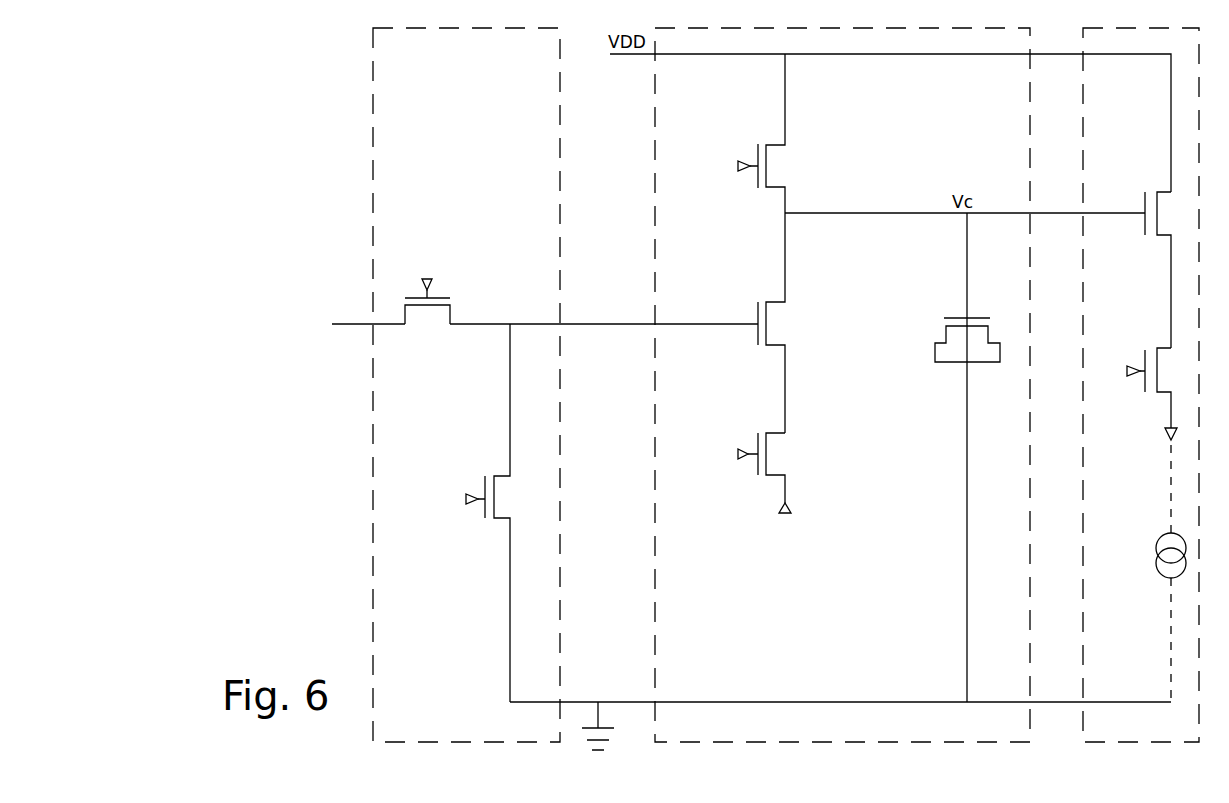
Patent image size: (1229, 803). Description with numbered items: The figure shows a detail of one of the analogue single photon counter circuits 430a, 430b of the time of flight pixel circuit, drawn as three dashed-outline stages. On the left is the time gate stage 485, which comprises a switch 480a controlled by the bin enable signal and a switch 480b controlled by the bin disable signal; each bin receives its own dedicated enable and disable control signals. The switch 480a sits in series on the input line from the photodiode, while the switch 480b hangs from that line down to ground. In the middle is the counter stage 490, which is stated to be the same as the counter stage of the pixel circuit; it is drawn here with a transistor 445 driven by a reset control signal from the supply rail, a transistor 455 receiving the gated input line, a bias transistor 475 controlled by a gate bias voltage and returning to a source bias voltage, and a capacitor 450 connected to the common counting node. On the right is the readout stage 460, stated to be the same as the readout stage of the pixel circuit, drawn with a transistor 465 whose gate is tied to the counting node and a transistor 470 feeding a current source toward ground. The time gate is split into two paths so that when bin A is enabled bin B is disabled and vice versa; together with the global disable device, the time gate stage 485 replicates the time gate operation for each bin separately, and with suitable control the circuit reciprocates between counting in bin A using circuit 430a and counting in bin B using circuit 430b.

The analogue single photon counter circuit 430a is at (313, 196).
The analogue single photon counter circuit 430b is at (514, 191).
The reset transistor (CR) 445 is at (759, 133).
The capacitor 450 is at (948, 457).
The transistor 455 is at (788, 323).
The readout stage 460 is at (1141, 385).
The transistor 465 is at (1170, 270).
The transistor 470 is at (1160, 394).
The bias transistor 475 is at (742, 486).
The switch 480a is at (445, 289).
The switch 480b is at (444, 513).
The time gate stage 485 is at (616, 385).
The counter stage 490 is at (842, 385).